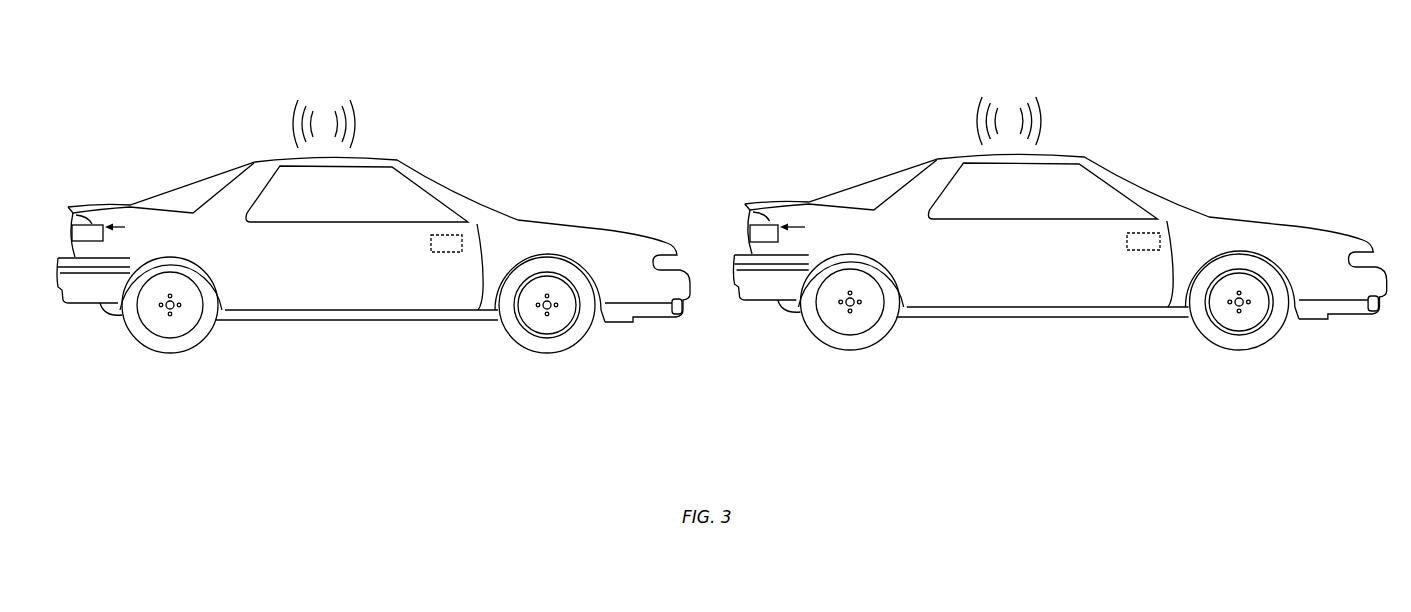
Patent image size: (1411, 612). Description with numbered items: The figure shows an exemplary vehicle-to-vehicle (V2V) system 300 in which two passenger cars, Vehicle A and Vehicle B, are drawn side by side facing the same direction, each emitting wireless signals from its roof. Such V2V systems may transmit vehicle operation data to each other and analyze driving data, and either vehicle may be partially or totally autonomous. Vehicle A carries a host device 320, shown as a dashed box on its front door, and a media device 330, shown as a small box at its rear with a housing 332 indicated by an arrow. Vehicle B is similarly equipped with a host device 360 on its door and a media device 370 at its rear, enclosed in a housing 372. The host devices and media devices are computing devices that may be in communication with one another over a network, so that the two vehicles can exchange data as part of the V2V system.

The vehicle communication environment 300 is at (735, 69).
The host device 320 is at (1143, 241).
The media device 330 is at (764, 233).
The housing 332 is at (803, 228).
The host device 360 is at (446, 243).
The media device 370 is at (87, 233).
The housing 372 is at (130, 228).